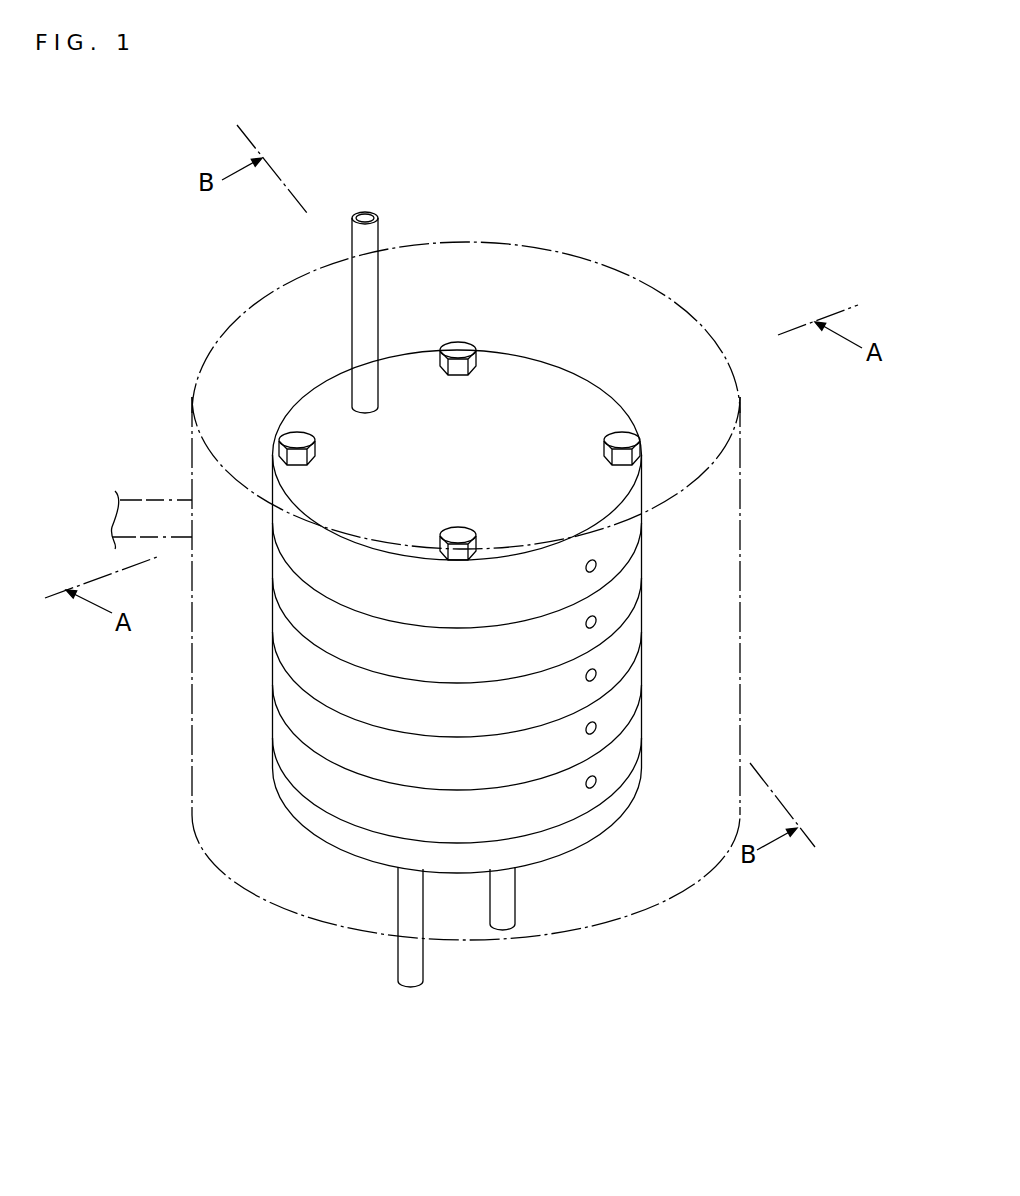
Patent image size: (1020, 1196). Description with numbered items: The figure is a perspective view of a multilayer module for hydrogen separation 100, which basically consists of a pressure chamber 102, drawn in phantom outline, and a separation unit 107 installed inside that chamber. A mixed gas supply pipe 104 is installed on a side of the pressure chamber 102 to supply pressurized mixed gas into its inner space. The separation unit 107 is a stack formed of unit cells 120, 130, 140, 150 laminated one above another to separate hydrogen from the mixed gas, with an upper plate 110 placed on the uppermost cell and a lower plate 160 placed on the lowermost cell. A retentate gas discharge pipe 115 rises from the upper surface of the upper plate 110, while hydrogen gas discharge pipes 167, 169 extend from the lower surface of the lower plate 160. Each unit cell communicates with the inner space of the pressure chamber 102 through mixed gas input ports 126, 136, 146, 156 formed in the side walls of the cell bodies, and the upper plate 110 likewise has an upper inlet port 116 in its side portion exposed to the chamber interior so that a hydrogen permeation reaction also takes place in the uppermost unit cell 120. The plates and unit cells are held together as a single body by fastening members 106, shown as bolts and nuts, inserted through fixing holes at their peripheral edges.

The multilayer module for hydrogen separation 100 is at (748, 128).
The pressure chamber 102 is at (583, 257).
The mixed gas supply pipe 104 is at (145, 500).
The fastening member 106 is at (292, 440).
The separation unit 107 is at (642, 410).
The upper plate 110 is at (640, 512).
The retentate gas discharge pipe 115 is at (360, 262).
The upper inlet port 116 is at (587, 568).
The unit cell 120 is at (640, 567).
The mixed gas input port 126 is at (587, 625).
The unit cell 130 is at (640, 621).
The mixed gas input port 136 is at (587, 678).
The unit cell 140 is at (640, 674).
The mixed gas input port 146 is at (587, 731).
The unit cell 150 is at (640, 734).
The mixed gas input port 156 is at (587, 785).
The lower plate 160 is at (640, 778).
The hydrogen gas discharge pipe 167 is at (510, 905).
The hydrogen gas discharge pipe 169 is at (417, 966).